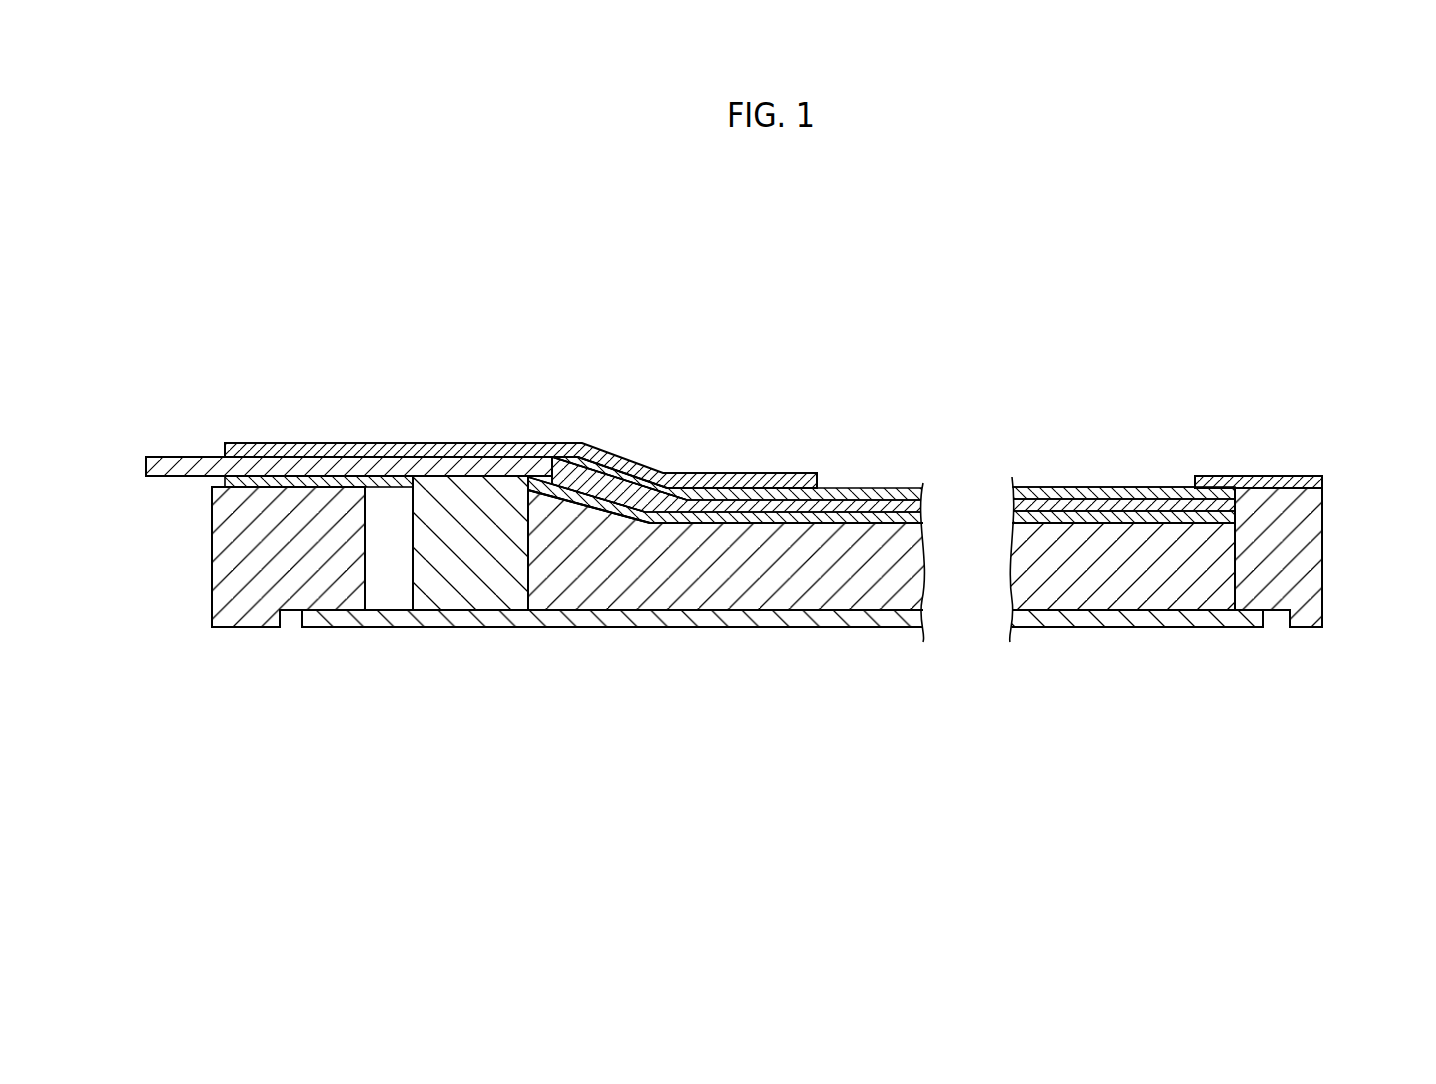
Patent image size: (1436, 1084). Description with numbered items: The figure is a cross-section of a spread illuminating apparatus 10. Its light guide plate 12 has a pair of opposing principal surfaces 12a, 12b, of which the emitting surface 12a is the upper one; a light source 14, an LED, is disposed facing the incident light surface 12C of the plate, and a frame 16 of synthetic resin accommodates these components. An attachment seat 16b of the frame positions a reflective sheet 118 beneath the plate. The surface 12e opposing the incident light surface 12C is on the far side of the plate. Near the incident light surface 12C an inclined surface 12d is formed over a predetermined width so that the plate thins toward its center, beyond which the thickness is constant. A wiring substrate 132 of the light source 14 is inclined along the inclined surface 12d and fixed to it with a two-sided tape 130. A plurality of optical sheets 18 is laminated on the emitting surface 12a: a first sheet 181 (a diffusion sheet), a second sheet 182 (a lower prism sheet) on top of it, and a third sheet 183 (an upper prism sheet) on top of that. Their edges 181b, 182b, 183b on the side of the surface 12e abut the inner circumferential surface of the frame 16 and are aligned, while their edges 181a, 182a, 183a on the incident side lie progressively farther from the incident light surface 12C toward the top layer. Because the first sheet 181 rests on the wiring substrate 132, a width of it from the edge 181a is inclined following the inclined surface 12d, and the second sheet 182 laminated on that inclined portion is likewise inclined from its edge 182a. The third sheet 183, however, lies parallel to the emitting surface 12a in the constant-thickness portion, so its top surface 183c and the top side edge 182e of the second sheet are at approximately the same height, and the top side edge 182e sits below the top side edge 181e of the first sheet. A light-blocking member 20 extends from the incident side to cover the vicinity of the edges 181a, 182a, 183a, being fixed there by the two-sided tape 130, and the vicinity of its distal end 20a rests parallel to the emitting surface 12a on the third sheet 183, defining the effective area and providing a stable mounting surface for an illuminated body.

The spread illuminating apparatus 10 is at (1037, 290).
The light guide plate 12 is at (703, 580).
The emitting surface 12a is at (1111, 515).
The principal surface 12b is at (880, 618).
The incident light surface 12C is at (523, 562).
The inclined surface 12d is at (548, 482).
The surface opposing the incident light surface 12e is at (1245, 554).
The light source 14 is at (456, 583).
The frame 16 is at (235, 628).
The attachment seat 16b is at (290, 614).
The optical sheets 18 is at (976, 399).
The first sheet 181 is at (858, 510).
The edge of first sheet 181a is at (551, 480).
The edge of first sheet 181b is at (1237, 520).
The top side edge of first sheet 181e is at (581, 445).
The second sheet 182 is at (878, 500).
The edge of second sheet 182a is at (645, 476).
The edge of second sheet 182b is at (1290, 475).
The top side edge of second sheet 182e is at (690, 477).
The third sheet 183 is at (905, 490).
The edge of third sheet 183a is at (713, 474).
The edge of third sheet 183b is at (1240, 475).
The top surface of third sheet 183c is at (1103, 419).
The light-blocking member 20 is at (390, 443).
The distal end of light-blocking member 20a is at (815, 472).
The reflective sheet 118 is at (793, 628).
The two-sided tape 130 is at (262, 490).
The wiring substrate 132 is at (182, 456).